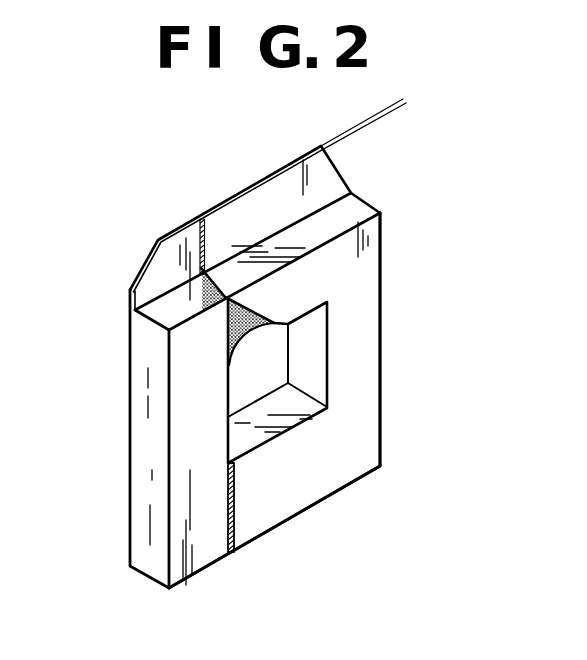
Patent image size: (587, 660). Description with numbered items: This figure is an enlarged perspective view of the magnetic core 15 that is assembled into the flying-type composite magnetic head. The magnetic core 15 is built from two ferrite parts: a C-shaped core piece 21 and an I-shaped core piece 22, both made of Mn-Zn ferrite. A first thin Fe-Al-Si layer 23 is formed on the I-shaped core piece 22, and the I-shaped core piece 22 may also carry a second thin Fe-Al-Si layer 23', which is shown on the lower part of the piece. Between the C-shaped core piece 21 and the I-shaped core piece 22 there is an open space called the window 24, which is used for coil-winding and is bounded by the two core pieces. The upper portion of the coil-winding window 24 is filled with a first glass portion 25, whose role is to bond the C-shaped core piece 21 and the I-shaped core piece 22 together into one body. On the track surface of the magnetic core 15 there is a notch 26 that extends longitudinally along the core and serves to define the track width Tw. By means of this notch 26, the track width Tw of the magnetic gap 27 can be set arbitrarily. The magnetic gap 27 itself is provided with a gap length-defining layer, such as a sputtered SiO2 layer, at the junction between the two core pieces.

The magnetic core 15 is at (121, 238).
The C-shaped core piece 21 is at (382, 258).
The I-shaped core piece 22 is at (197, 569).
The first thin Fe-Al-Si layer 23 is at (215, 212).
The second thin Fe-Al-Si layer 23' is at (289, 519).
The window 24 is at (278, 357).
The first glass portion 25 is at (260, 298).
The notch 26 is at (357, 213).
The magnetic gap 27 is at (198, 216).
The track width Tw is at (368, 90).